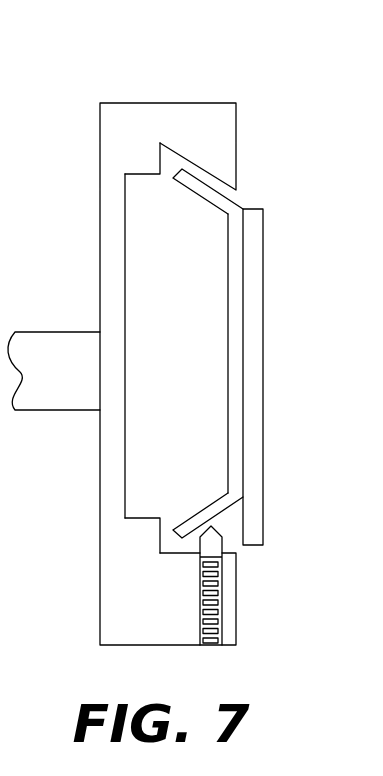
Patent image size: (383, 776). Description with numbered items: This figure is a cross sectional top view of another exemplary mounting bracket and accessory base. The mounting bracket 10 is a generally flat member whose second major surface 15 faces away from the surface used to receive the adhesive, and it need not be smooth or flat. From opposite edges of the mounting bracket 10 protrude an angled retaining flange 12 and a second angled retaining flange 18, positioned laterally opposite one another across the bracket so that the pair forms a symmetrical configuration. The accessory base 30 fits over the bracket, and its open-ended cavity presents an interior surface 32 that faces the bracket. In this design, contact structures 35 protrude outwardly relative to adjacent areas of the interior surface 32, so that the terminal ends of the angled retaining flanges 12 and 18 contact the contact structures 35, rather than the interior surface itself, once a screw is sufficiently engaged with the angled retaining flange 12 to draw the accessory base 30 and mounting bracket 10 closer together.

The mounting bracket 10 is at (235, 373).
The angled retaining flange 12 is at (197, 512).
The second major surface 15 is at (225, 252).
The second angled retaining flange 18 is at (205, 192).
The accessory base 30 is at (112, 145).
The interior surface 32 is at (126, 290).
The contact structures 35 is at (145, 162).